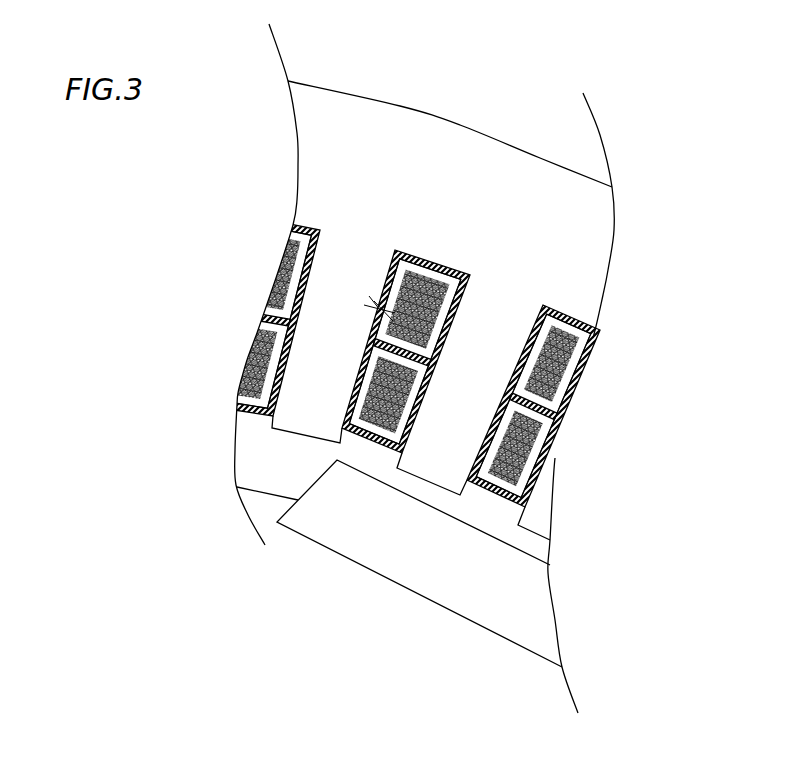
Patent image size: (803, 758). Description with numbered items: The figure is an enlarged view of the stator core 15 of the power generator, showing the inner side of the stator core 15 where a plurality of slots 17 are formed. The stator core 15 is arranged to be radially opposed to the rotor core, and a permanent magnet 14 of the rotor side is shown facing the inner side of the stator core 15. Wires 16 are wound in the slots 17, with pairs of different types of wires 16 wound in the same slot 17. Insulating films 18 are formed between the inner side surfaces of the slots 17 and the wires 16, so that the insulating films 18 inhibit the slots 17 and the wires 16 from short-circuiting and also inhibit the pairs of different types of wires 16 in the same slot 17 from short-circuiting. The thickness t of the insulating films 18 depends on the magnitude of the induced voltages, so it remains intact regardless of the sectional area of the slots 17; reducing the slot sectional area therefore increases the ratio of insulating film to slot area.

The permanent magnets 14 is at (390, 560).
The stator core 15 is at (320, 110).
The wires 16 is at (408, 282).
The slots 17 is at (433, 253).
The insulating films 18 is at (453, 270).